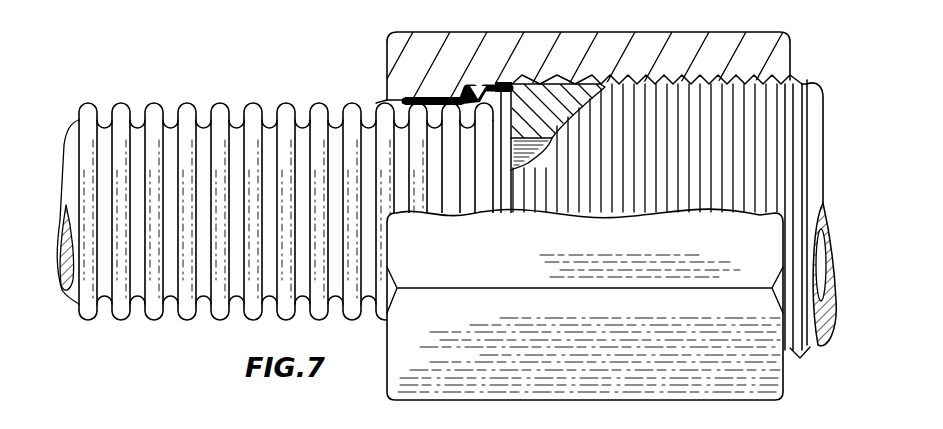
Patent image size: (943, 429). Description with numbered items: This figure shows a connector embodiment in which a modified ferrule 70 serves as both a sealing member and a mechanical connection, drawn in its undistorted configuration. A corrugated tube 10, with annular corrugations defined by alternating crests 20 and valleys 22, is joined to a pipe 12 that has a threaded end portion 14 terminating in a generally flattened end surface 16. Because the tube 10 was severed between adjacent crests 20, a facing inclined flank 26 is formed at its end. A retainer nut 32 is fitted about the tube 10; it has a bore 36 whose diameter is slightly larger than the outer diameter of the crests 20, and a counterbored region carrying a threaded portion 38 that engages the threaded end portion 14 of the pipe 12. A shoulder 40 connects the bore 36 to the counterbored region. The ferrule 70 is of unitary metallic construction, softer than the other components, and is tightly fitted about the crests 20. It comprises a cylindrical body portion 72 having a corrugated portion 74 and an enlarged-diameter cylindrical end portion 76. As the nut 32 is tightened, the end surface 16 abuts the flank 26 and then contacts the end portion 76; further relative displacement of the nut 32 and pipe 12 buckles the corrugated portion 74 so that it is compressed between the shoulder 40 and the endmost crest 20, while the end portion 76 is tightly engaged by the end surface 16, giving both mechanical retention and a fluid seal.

The tube 10 is at (200, 63).
The pipe 12 is at (812, 90).
The threaded end portion 14 is at (732, 85).
The end surface 16 is at (509, 109).
The crests 20 is at (197, 90).
The valleys 22 is at (238, 127).
The flank 26 is at (512, 213).
The retainer nut 32 is at (682, 45).
The bore 36 is at (396, 106).
The threaded portion 38 is at (573, 77).
The shoulder 40 is at (448, 82).
The ferrule 70 is at (455, 96).
The cylindrical body portion 72 is at (405, 100).
The corrugated portion 74 is at (470, 84).
The cylindrical end portion 76 is at (511, 82).